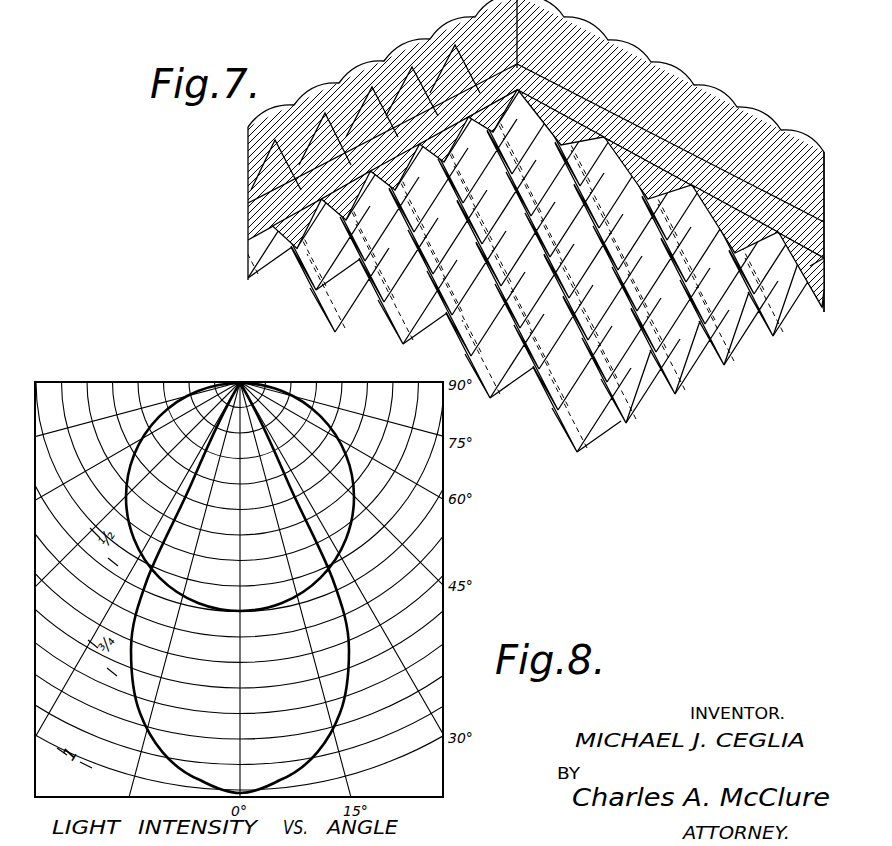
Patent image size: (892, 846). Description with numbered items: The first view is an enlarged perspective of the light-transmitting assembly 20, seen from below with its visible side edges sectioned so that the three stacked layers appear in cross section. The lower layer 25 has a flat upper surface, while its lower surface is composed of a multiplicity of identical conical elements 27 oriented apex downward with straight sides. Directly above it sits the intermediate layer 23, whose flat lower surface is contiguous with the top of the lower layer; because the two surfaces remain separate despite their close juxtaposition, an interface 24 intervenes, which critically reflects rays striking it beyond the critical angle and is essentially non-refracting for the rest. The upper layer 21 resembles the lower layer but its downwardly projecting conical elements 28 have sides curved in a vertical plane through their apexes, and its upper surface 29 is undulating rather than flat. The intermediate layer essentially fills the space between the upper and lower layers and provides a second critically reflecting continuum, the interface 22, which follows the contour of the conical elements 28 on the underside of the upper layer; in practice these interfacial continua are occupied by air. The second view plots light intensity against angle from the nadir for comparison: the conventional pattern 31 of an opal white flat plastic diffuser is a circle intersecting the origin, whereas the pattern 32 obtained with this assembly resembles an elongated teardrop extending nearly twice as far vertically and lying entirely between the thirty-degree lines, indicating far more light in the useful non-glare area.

In FIG. 7, the light-transmitting assembly 20 is at (240, 228).
In FIG. 7, the upper layer 21 is at (241, 158).
In FIG. 7, the interface 22 is at (818, 152).
In FIG. 7, the intermediate layer 23 is at (758, 156).
In FIG. 7, the interface 24 is at (806, 284).
In FIG. 7, the lower layer 25 is at (241, 255).
In FIG. 7, the conical elements 27 is at (576, 454).
In FIG. 7, the conical elements 28 is at (336, 120).
In FIG. 7, the upper surface 29 is at (468, 22).
In FIG. 8, the conventional pattern 31 is at (358, 420).
In FIG. 8, the pattern 32 is at (352, 650).